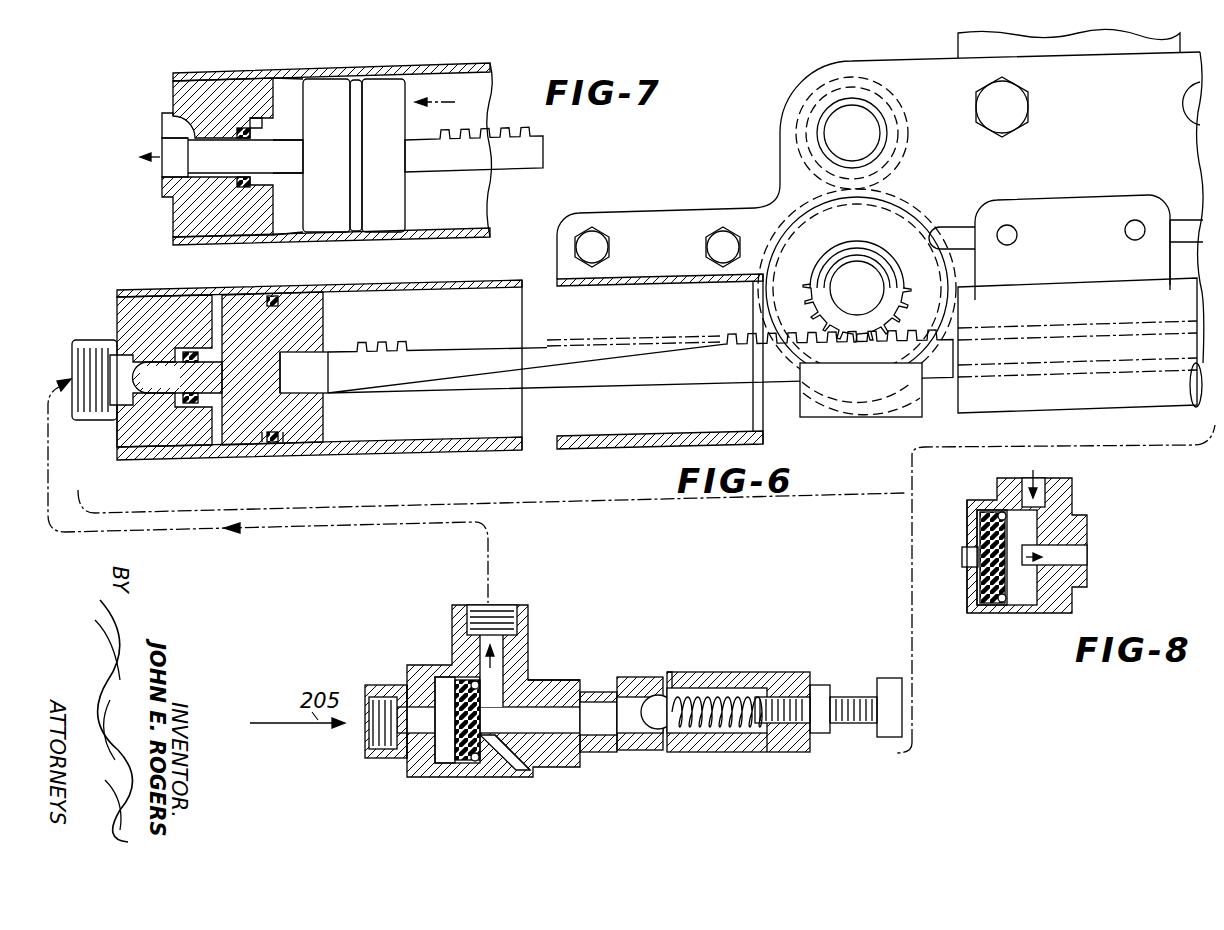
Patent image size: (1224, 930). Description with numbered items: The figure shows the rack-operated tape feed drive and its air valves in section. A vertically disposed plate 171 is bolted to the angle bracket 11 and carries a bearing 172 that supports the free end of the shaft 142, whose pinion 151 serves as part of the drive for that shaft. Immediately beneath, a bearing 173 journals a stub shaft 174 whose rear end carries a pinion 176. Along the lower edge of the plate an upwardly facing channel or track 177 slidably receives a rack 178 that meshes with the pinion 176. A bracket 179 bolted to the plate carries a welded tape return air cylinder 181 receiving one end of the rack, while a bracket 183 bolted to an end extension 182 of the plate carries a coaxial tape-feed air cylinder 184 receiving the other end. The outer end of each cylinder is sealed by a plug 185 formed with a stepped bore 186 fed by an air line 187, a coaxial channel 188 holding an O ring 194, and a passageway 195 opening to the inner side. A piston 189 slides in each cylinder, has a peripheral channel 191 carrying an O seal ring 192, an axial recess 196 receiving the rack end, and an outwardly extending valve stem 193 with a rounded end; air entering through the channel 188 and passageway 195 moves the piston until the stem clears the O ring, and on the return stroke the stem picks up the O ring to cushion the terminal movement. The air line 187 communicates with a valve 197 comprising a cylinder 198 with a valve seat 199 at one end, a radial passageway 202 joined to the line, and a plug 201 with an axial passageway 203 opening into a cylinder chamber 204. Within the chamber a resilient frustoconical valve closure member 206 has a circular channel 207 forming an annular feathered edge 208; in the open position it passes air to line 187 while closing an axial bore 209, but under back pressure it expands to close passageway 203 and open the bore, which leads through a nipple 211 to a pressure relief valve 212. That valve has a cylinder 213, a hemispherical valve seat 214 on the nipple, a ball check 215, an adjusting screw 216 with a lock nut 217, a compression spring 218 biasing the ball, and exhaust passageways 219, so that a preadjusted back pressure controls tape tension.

In FIG. 6, the angle bracket 11 is at (1047, 36).
In FIG. 6, the shaft 142 is at (866, 146).
In FIG. 6, the pinion 151 is at (906, 152).
In FIG. 6, the plate 171 is at (886, 50).
In FIG. 6, the bearing 172 is at (886, 120).
In FIG. 6, the bearing 173 is at (866, 258).
In FIG. 6, the stub shaft 174 is at (846, 268).
In FIG. 6, the pinion 176 is at (905, 316).
In FIG. 6, the channel or track 177 is at (848, 416).
In FIG. 7, the rack 178 is at (518, 166).
In FIG. 6, the rack 178 is at (653, 386).
In FIG. 6, the bracket 179 is at (1078, 203).
In FIG. 6, the tape return air cylinder 181 is at (1105, 290).
In FIG. 6, the end extension 182 is at (660, 212).
In FIG. 6, the bracket 183 is at (630, 218).
In FIG. 6, the tape-feed air cylinder 184 is at (491, 282).
In FIG. 7, the plug 185 is at (173, 99).
In FIG. 6, the plug 185 is at (117, 305).
In FIG. 7, the stepped bore 186 is at (185, 128).
In FIG. 6, the stepped bore 186 is at (140, 352).
In FIG. 6, the air line 187 is at (478, 550).
In FIG. 7, the channel 188 is at (243, 188).
In FIG. 6, the channel 188 is at (150, 412).
In FIG. 7, the piston 189 is at (320, 84).
In FIG. 6, the piston 189 is at (325, 330).
In FIG. 6, the peripheral channel 191 is at (282, 446).
In FIG. 7, the O seal ring 192 is at (356, 80).
In FIG. 6, the O seal ring 192 is at (270, 444).
In FIG. 7, the valve stem 193 is at (278, 167).
In FIG. 6, the valve stem 193 is at (172, 387).
In FIG. 7, the O ring 194 is at (242, 130).
In FIG. 6, the O ring 194 is at (191, 405).
In FIG. 7, the passageway 195 is at (254, 126).
In FIG. 6, the passageway 195 is at (195, 352).
In FIG. 6, the axial recess 196 is at (316, 400).
In FIG. 6, the valve 197 is at (627, 630).
In FIG. 6, the cylinder 198 is at (495, 768).
In FIG. 8, the cylinder 198 is at (1078, 514).
In FIG. 6, the valve seat 199 is at (548, 682).
In FIG. 6, the plug 201 is at (392, 760).
In FIG. 8, the plug 201 is at (967, 584).
In FIG. 6, the radial passageway 202 is at (520, 656).
In FIG. 8, the radial passageway 202 is at (1050, 487).
In FIG. 6, the axial passageway 203 is at (407, 686).
In FIG. 6, the cylinder chamber 204 is at (448, 763).
In FIG. 8, the cylinder chamber 204 is at (1028, 598).
In FIG. 6, the resilient valve closure member 206 is at (462, 680).
In FIG. 8, the resilient valve closure member 206 is at (980, 530).
In FIG. 6, the circular channel 207 is at (486, 742).
In FIG. 8, the circular channel 207 is at (1004, 602).
In FIG. 6, the annular feathered edge 208 is at (478, 760).
In FIG. 8, the annular feathered edge 208 is at (1000, 510).
In FIG. 6, the axial bore 209 is at (512, 748).
In FIG. 8, the axial bore 209 is at (1088, 556).
In FIG. 6, the nipple 211 is at (593, 692).
In FIG. 6, the pressure relief valve 212 is at (758, 672).
In FIG. 6, the cylinder 213 is at (761, 753).
In FIG. 6, the hemispherical valve seat 214 is at (636, 752).
In FIG. 6, the ball check 215 is at (656, 731).
In FIG. 6, the adjusting screw 216 is at (856, 724).
In FIG. 6, the lock nut 217 is at (823, 685).
In FIG. 6, the compression spring 218 is at (718, 733).
In FIG. 6, the exhaust passageways 219 is at (676, 672).